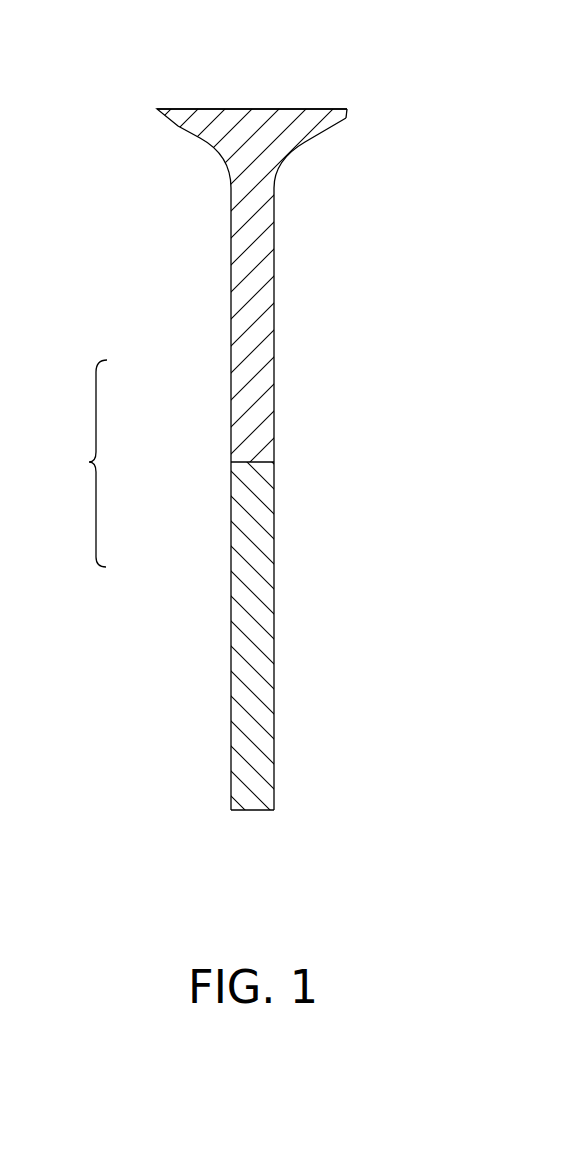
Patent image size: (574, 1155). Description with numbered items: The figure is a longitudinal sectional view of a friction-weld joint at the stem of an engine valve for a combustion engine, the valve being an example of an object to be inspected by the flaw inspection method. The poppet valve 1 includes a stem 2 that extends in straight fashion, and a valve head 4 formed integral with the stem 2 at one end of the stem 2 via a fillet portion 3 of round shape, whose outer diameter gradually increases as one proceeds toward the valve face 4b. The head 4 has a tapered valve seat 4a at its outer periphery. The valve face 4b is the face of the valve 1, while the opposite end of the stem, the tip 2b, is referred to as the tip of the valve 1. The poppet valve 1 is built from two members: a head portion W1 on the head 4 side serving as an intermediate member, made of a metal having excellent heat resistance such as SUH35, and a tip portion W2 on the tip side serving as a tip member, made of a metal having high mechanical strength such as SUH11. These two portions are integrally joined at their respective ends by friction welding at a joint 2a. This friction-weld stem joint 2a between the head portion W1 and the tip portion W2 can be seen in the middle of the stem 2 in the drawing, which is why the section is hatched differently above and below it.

The poppet valve 1 is at (287, 462).
The stem 2 is at (287, 552).
The joint 2a is at (275, 461).
The tip 2b is at (252, 811).
The fillet portion 3 is at (300, 143).
The valve head 4 is at (287, 237).
The valve seat 4a is at (342, 120).
The valve face 4b is at (263, 107).
The head portion W1 is at (231, 332).
The tip portion W2 is at (231, 597).